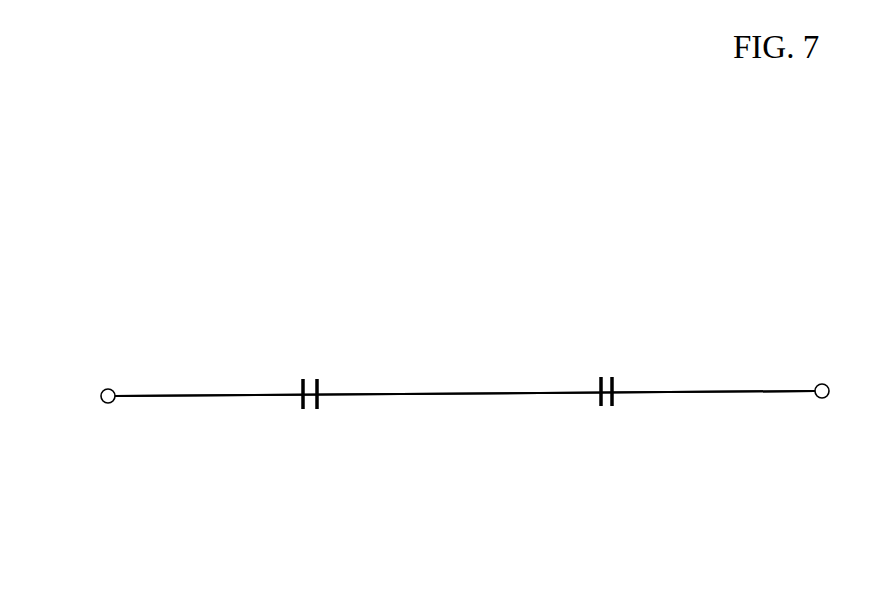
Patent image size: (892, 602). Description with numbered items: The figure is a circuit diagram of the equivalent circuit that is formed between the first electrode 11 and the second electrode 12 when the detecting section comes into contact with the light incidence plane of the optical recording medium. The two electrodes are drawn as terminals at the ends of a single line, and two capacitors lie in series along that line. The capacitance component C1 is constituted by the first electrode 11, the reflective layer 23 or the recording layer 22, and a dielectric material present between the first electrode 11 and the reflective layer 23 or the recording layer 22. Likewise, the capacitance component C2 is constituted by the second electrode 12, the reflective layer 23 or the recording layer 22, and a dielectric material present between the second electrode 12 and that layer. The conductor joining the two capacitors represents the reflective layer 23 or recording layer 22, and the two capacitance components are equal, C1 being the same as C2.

The first electrode 11 is at (819, 384).
The second electrode 12 is at (105, 389).
The recording layer 22 is at (465, 393).
The reflective layer 23 is at (420, 393).
The capacitance component C1 is at (607, 408).
The capacitance component C2 is at (310, 410).